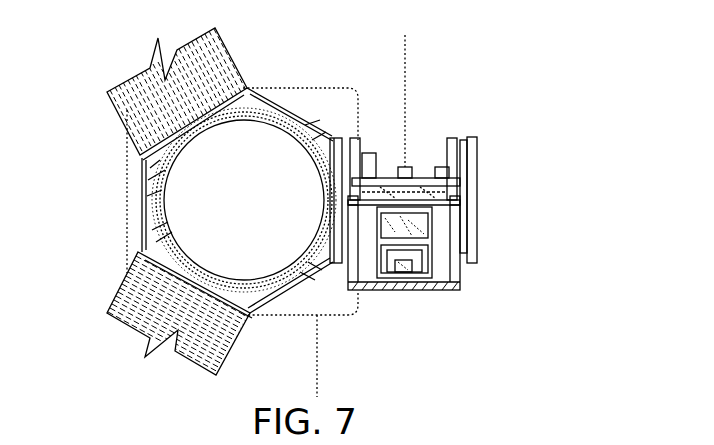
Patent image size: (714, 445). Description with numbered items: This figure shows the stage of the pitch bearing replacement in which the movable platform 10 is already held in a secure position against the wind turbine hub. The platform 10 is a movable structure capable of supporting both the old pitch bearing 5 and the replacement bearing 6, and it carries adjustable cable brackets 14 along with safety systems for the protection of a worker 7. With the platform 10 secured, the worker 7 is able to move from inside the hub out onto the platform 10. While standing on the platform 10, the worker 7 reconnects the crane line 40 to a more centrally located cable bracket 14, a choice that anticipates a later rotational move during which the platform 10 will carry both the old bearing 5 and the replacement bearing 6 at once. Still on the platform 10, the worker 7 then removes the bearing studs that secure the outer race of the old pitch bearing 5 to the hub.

The old pitch bearing 5 is at (340, 130).
The replacement bearing 6 is at (483, 258).
The worker 7 is at (403, 196).
The movable platform 10 is at (458, 289).
The cable bracket 14 is at (405, 167).
The crane line 40 is at (405, 100).